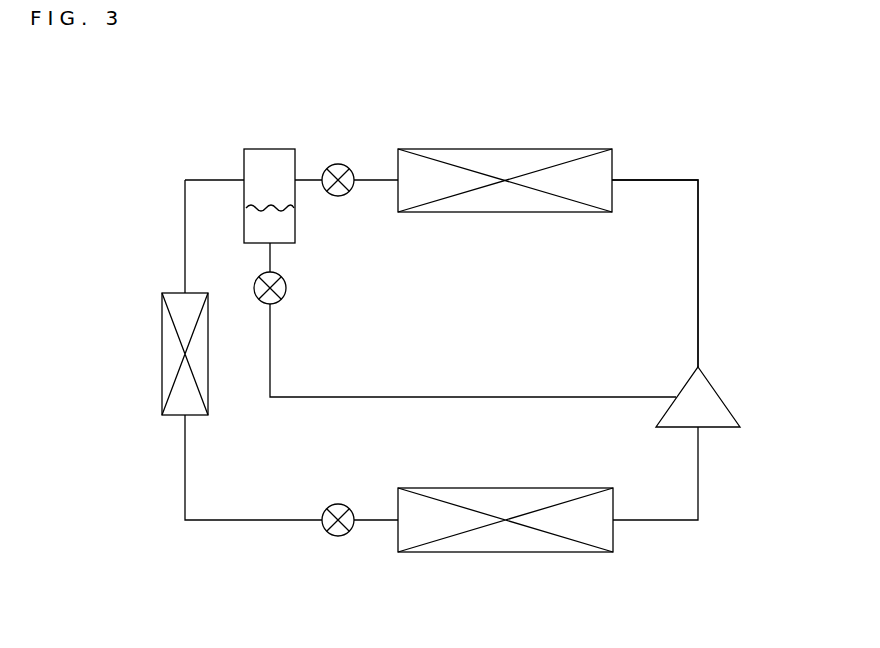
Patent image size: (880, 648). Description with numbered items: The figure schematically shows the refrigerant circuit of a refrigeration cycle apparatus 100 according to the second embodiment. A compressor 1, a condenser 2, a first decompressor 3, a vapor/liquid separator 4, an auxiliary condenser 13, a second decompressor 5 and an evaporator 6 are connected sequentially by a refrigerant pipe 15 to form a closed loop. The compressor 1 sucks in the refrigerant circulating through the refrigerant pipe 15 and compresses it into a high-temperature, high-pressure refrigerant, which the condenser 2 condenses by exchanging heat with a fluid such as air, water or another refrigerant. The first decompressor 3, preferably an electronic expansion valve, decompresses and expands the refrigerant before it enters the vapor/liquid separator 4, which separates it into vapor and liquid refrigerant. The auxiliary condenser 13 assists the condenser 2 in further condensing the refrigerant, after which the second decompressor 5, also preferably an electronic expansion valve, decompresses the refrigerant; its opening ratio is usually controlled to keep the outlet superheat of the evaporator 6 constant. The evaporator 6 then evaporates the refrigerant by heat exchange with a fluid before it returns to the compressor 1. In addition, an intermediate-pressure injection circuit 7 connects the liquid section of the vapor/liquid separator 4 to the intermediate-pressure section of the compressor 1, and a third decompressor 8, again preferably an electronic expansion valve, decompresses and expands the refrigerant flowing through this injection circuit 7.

The compressor 1 is at (718, 392).
The condenser 2 is at (535, 148).
The first decompressor 3 is at (340, 165).
The vapor/liquid separator 4 is at (267, 149).
The second decompressor 5 is at (330, 535).
The evaporator 6 is at (487, 553).
The intermediate-pressure injection circuit 7 is at (442, 396).
The third decompressor 8 is at (286, 296).
The auxiliary condenser 13 is at (161, 322).
The refrigerant pipe 15 is at (663, 179).
The refrigeration cycle apparatus 100 is at (207, 156).